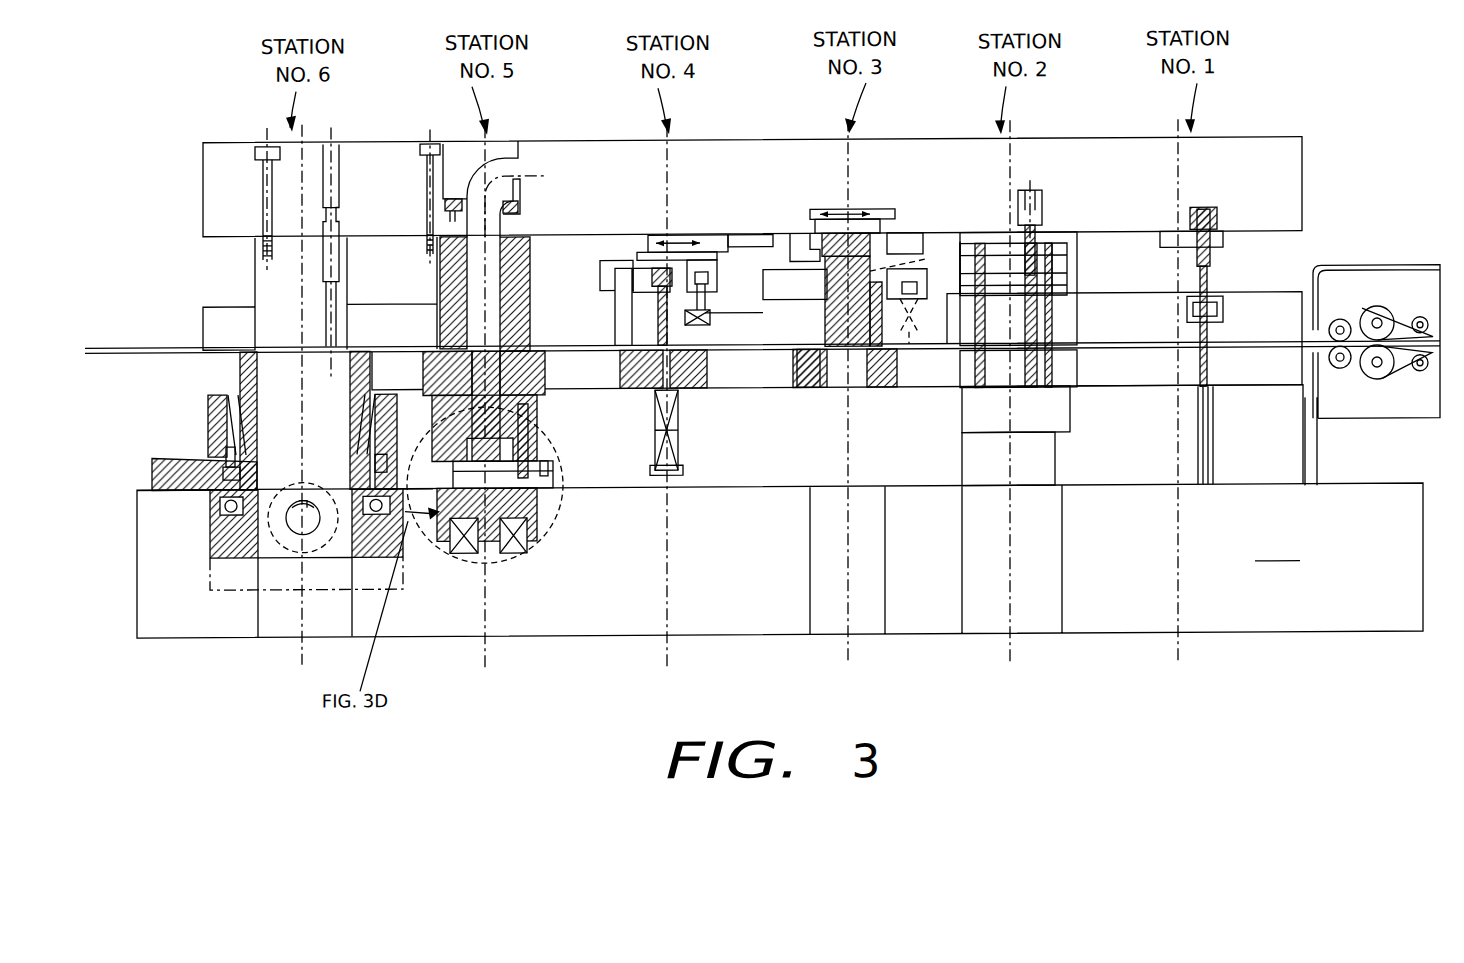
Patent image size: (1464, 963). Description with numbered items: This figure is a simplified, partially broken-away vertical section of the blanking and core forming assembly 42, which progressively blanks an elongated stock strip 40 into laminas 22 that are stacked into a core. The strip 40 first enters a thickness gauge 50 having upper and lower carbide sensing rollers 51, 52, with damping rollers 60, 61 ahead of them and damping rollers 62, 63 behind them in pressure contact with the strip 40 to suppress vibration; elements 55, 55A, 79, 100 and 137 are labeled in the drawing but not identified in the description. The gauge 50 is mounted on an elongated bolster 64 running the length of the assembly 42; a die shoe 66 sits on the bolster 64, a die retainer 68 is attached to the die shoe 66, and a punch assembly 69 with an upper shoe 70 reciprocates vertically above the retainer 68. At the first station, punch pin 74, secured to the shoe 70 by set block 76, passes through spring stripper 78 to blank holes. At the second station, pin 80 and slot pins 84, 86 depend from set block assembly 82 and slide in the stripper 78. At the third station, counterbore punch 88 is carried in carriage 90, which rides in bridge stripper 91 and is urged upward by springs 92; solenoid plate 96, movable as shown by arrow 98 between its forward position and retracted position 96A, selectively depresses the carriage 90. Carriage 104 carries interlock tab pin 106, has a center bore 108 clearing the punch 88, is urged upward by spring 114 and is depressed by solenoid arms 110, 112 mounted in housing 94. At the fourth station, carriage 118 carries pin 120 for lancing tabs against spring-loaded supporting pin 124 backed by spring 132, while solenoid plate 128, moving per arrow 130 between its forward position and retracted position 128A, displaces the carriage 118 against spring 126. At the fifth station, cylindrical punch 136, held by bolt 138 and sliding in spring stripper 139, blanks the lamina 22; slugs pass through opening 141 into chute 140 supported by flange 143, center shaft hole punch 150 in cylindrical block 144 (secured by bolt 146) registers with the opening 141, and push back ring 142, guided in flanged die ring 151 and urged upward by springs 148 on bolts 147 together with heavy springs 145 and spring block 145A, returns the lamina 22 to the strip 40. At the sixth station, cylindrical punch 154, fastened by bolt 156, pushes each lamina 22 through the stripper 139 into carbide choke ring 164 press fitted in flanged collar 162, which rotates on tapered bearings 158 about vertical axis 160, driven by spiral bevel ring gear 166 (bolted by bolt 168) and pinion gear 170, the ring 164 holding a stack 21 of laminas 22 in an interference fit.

The stack 21 is at (280, 342).
The lamina 22 is at (440, 335).
The stock strip 40 is at (100, 344).
The blanking and core forming assembly 42 is at (1165, 642).
The thickness gauge 50 is at (1392, 430).
The carbide roller 51 is at (1377, 306).
The carbide roller 52 is at (1374, 379).
The upper lever 55 is at (1410, 318).
The lower lever 55A is at (1400, 376).
The damping roller 60 is at (1425, 317).
The damping roller 61 is at (1432, 372).
The damping roller 62 is at (1340, 319).
The damping roller 63 is at (1338, 368).
The bolster 64 is at (1277, 552).
The die shoe 66 is at (1100, 430).
The die retainer 68 is at (1100, 366).
The punch assembly 69 is at (1272, 133).
The upper shoe 70 is at (1308, 148).
The punch pin 74 is at (1212, 284).
The set block 76 is at (1223, 240).
The spring stripper 78 is at (1100, 322).
The guide sleeve 79 is at (1215, 380).
The pin 80 is at (1025, 220).
The set block assembly 82 is at (1068, 260).
The pin 84 is at (983, 232).
The pin 86 is at (1052, 272).
The counterbore punch 88 is at (815, 262).
The carriage 90 is at (830, 236).
The bridge stripper 91 is at (725, 293).
The compression spring 92 is at (930, 262).
The housing 94 is at (925, 240).
The solenoid plate 96 is at (828, 218).
The retracted position of solenoid plate 96A is at (872, 233).
The double headed arrow 98 is at (850, 233).
The retainer 100 is at (808, 230).
The carriage 104 is at (770, 270).
The interlock tab blank punch pin 106 is at (850, 375).
The center bore 108 is at (815, 320).
The solenoid arm 110 is at (800, 235).
The solenoid arm 112 is at (895, 253).
The spring 114 is at (912, 378).
The carriage 118 is at (608, 260).
The pin 120 is at (692, 369).
The supporting pin 124 is at (695, 388).
The spring 126 is at (715, 322).
The solenoid plate 128 is at (658, 254).
The retracted position of solenoid plate 128A is at (700, 235).
The double headed arrow 130 is at (670, 235).
The spring 132 is at (675, 438).
The cylindrical punch 136 is at (543, 300).
The screw 137 is at (448, 198).
The bolt 138 is at (420, 172).
The spring stripper 139 is at (388, 300).
The chute 140 is at (545, 160).
The opening 141 is at (500, 232).
The push back ring 142 is at (540, 405).
The flange 143 is at (543, 186).
The cylindrical block 144 is at (560, 476).
The heavy compression spring 145 is at (475, 560).
The spring block 145A is at (545, 520).
The bolt 146 is at (548, 490).
The bolt 147 is at (550, 460).
The spring 148 is at (545, 430).
The center shaft hole punch 150 is at (556, 372).
The flanged die ring 151 is at (570, 395).
The cylindrical punch 154 is at (240, 270).
The bolt 156 is at (262, 190).
The tapered bearings 158 is at (210, 405).
The vertical axis 160 is at (297, 648).
The flanged collar 162 is at (210, 425).
The carbide choke ring 164 is at (243, 360).
The spiral bevel ring gear 166 is at (195, 470).
The bolt 168 is at (215, 490).
The spiral bevel pinion gear 170 is at (292, 558).